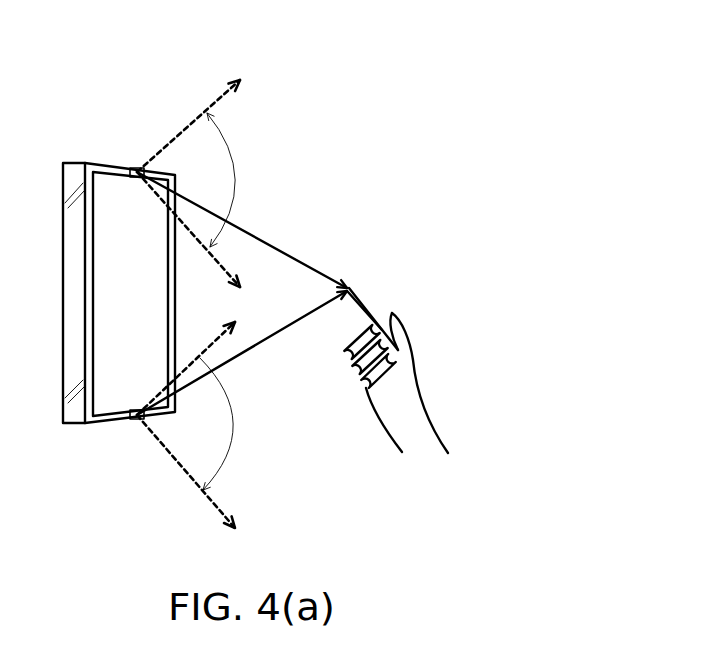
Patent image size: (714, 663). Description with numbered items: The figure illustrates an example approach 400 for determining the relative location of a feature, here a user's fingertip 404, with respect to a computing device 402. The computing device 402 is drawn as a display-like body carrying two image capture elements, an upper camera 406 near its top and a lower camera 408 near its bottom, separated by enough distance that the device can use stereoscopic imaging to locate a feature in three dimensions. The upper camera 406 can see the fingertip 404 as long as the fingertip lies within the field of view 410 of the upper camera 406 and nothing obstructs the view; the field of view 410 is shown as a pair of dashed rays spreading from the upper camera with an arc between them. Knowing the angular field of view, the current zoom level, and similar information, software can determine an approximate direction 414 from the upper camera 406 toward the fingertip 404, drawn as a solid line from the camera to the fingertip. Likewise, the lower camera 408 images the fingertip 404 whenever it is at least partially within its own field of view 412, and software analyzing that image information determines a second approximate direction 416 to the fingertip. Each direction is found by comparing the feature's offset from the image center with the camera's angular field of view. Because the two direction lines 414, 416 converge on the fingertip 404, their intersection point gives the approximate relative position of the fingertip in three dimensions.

The gesture sensing system 400 is at (567, 88).
The computing device 402 is at (107, 165).
The fingertip 404 is at (365, 288).
The upper camera 406 is at (137, 170).
The lower camera 408 is at (137, 418).
The field of view of the upper camera 410 is at (215, 100).
The field of view of the lower camera 412 is at (183, 465).
The approximate direction 414 is at (272, 242).
The approximate direction 416 is at (262, 350).